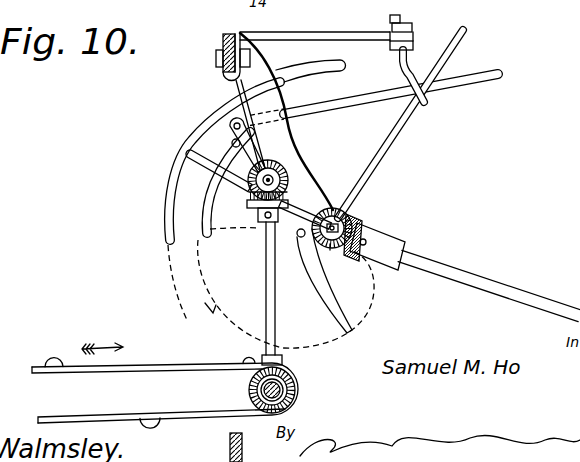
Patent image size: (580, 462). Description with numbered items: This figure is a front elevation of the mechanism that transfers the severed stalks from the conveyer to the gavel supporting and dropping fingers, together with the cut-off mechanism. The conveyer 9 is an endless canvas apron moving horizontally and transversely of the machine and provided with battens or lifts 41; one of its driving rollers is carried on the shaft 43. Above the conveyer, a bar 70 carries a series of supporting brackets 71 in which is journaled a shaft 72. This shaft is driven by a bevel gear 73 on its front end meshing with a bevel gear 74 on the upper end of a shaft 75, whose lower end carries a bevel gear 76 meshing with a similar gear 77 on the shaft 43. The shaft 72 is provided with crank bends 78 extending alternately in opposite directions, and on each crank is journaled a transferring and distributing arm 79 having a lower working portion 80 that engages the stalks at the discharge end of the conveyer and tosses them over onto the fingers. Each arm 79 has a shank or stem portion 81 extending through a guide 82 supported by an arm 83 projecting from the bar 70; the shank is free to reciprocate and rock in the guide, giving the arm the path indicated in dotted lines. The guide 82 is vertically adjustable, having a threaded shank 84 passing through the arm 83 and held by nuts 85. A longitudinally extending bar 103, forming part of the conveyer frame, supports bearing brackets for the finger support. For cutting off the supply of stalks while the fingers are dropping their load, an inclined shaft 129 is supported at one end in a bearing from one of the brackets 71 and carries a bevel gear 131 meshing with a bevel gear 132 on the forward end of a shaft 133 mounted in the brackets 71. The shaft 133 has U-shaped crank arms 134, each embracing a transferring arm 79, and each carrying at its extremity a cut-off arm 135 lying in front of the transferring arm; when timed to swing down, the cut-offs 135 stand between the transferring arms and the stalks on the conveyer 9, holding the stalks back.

The conveyer 9 is at (140, 364).
The battens or lifts 41 is at (57, 358).
The shaft 43 is at (297, 388).
The bar 70 is at (222, 38).
The supporting brackets 71 is at (280, 100).
The shaft 72 is at (268, 178).
The bevel gear 73 is at (275, 187).
The bevel gear 74 is at (250, 203).
The shaft 75 is at (266, 301).
The bevel gear 76 is at (291, 370).
The bevel gear 77 is at (297, 403).
The crank bends 78 is at (273, 148).
The transferring and distributing arm 79 is at (230, 118).
The lower working portion 80 is at (206, 233).
The shank or stem portion 81 is at (459, 42).
The guide 82 is at (429, 102).
The arm 83 is at (345, 32).
The threaded shank 84 is at (402, 16).
The nuts 85 is at (413, 43).
The bar 103 is at (230, 443).
The shaft 129 is at (433, 251).
The bevel gear 131 is at (342, 218).
The bevel gear 132 is at (339, 208).
The shaft 133 is at (331, 250).
The crank arms 134 is at (186, 154).
The cut-off arm 135 is at (232, 143).